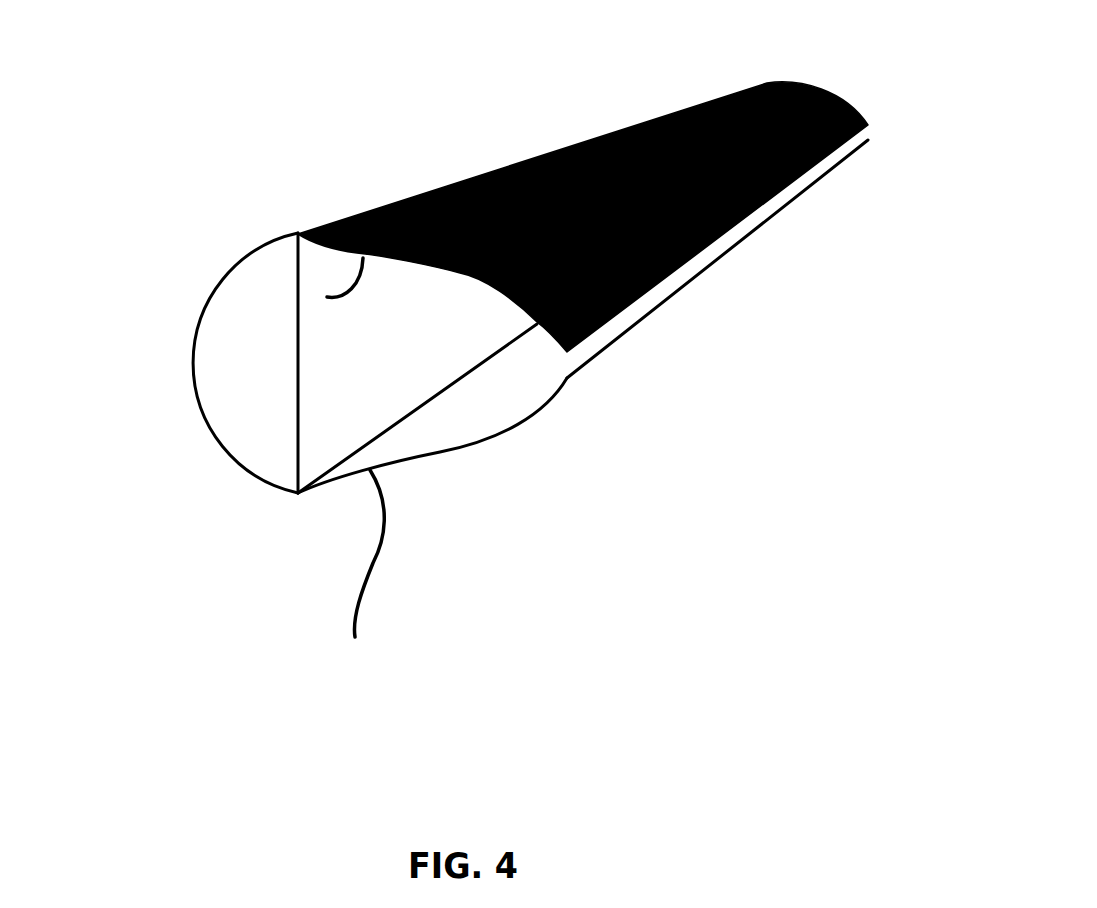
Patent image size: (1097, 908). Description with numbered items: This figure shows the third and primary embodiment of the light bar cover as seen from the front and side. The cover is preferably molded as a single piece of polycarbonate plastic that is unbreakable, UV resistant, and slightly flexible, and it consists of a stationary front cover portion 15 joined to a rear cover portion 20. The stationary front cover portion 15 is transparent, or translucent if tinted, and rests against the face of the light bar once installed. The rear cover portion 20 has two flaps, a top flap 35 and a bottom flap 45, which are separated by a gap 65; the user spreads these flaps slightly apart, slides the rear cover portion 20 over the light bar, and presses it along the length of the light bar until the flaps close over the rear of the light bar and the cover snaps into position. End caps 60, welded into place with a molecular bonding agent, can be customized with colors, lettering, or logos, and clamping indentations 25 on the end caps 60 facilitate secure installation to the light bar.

The stationary front cover portion 15 is at (192, 363).
The rear cover portion 20 is at (793, 202).
The clamping indentations 25 is at (327, 297).
The top flap 35 is at (833, 115).
The bottom flap 45 is at (503, 402).
The end caps 60 is at (288, 420).
The gap 65 is at (706, 258).